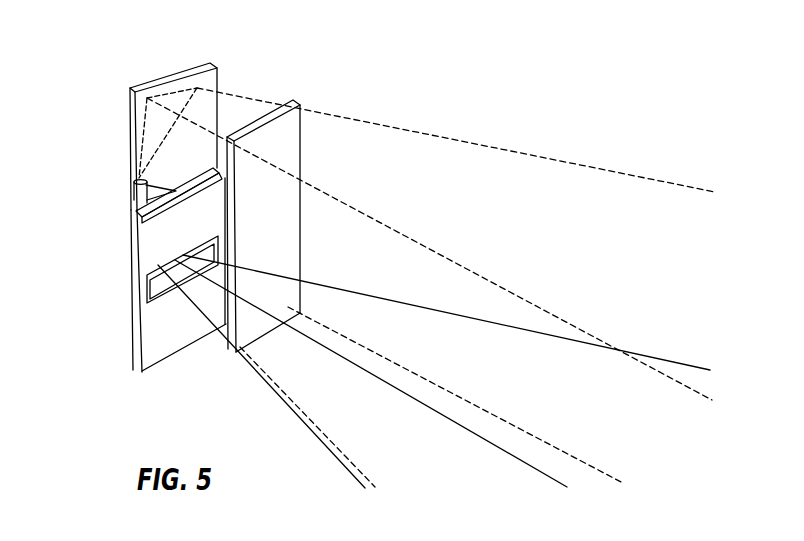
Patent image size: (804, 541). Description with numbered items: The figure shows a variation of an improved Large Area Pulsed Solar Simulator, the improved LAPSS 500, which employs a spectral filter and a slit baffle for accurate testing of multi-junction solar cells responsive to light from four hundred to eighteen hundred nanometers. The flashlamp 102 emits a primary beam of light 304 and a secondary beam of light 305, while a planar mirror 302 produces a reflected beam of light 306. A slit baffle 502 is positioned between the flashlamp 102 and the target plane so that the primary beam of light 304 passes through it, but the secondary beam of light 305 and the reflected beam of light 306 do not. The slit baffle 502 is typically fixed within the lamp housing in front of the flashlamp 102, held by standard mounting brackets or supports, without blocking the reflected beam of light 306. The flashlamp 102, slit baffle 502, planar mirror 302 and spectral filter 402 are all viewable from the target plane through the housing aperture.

The flashlamp 102 is at (137, 202).
The planar mirror 302 is at (212, 63).
The primary beam of light 304 is at (277, 398).
The secondary beam of light 305 is at (143, 138).
The reflected beam of light 306 is at (472, 142).
The spectral filter 402 is at (300, 102).
The improved LAPSS 500 is at (610, 128).
The slit baffle 502 is at (158, 362).